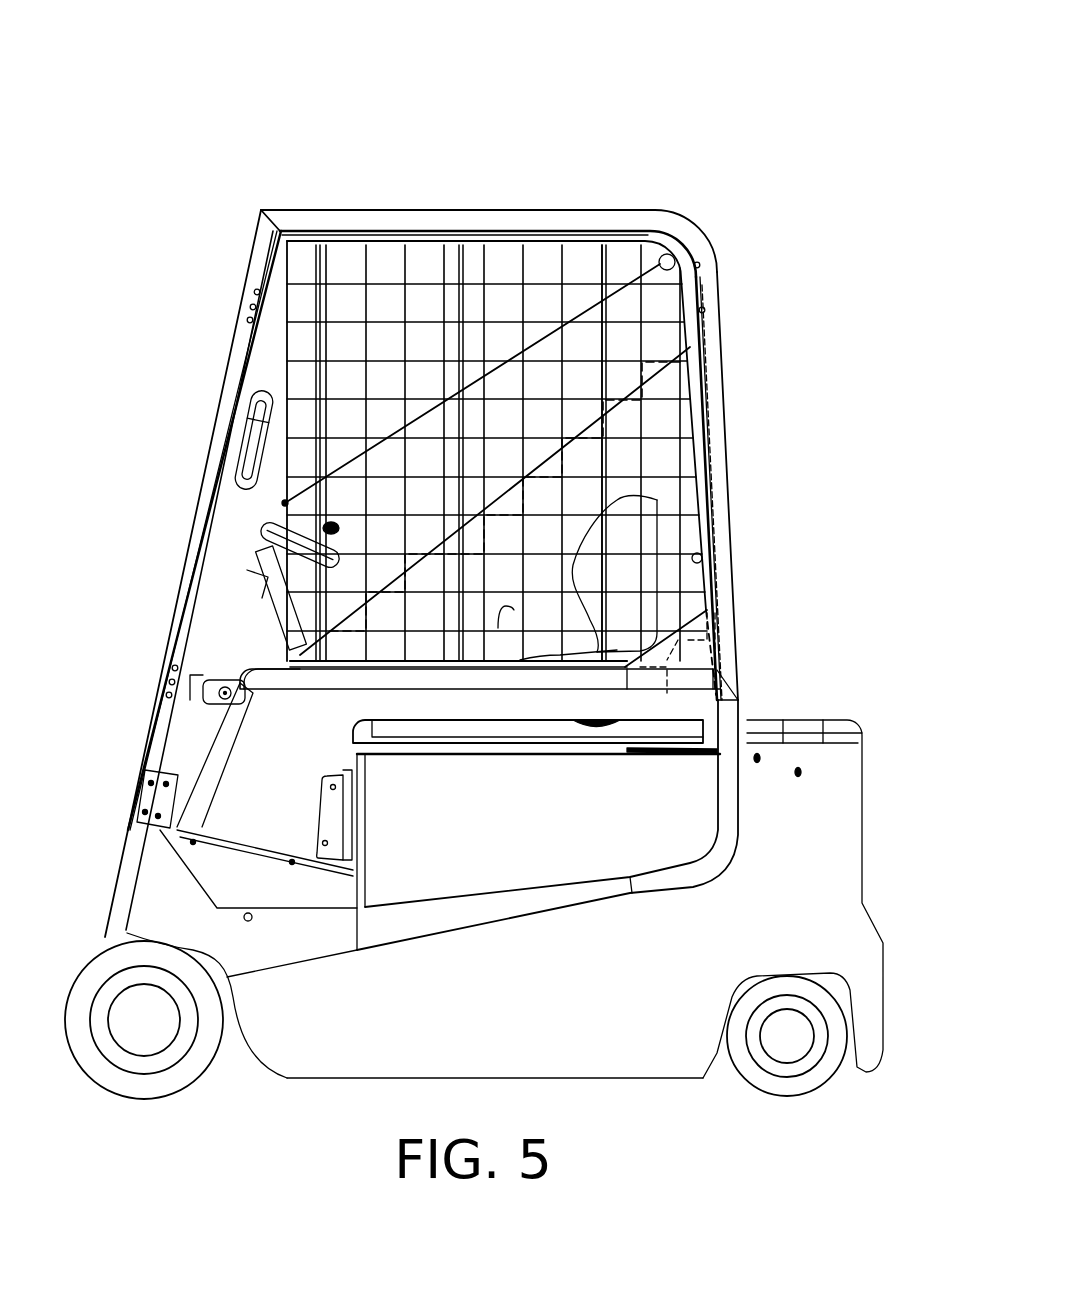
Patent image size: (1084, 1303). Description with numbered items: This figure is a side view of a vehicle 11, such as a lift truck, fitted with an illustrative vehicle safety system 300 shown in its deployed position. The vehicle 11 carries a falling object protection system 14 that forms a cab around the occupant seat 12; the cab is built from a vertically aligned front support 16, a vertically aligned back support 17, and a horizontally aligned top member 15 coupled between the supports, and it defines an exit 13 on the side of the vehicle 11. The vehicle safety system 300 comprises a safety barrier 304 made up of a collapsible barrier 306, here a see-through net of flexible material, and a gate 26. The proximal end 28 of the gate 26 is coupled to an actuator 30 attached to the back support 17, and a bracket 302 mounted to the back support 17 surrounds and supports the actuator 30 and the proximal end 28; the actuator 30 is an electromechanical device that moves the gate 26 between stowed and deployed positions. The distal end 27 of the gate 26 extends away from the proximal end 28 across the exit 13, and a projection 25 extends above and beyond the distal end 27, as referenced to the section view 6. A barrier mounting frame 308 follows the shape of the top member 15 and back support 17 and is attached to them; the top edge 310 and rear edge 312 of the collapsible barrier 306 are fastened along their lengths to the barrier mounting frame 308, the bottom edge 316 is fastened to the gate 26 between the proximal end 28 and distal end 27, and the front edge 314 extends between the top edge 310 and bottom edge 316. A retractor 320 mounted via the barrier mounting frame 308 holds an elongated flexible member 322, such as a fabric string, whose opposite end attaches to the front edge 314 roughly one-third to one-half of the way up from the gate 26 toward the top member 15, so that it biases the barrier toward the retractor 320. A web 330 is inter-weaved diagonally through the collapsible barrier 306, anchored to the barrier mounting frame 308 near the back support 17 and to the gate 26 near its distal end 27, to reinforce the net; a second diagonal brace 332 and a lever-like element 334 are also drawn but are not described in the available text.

The vehicle safety system 300 is at (221, 116).
The falling object protection system 14 is at (544, 188).
The top member 15 is at (428, 218).
The front support 16 is at (213, 478).
The back support 17 is at (718, 412).
The barrier mounting frame 308 is at (714, 505).
The elongated flexible member 322 is at (540, 335).
The top edge 310 is at (562, 245).
The retractor 320 is at (670, 254).
The lower diagonal brace 332 is at (690, 347).
The web 330 is at (664, 402).
The collapsible barrier 306 is at (665, 472).
The rear edge 312 is at (702, 556).
The bracket 302 is at (716, 604).
The actuator 30 is at (718, 672).
The vehicle 11 is at (858, 698).
The front edge 314 is at (283, 347).
The safety barrier 304 is at (264, 498).
The lever 334 is at (256, 612).
The projection 25 is at (173, 666).
The section line 6- 6 is at (210, 657).
The distal end 27 is at (265, 682).
The bottom edge 316 is at (358, 668).
The gate 26 is at (393, 678).
The exit 13 is at (498, 628).
The occupant seat 12 is at (533, 705).
The proximal end 28 is at (650, 680).